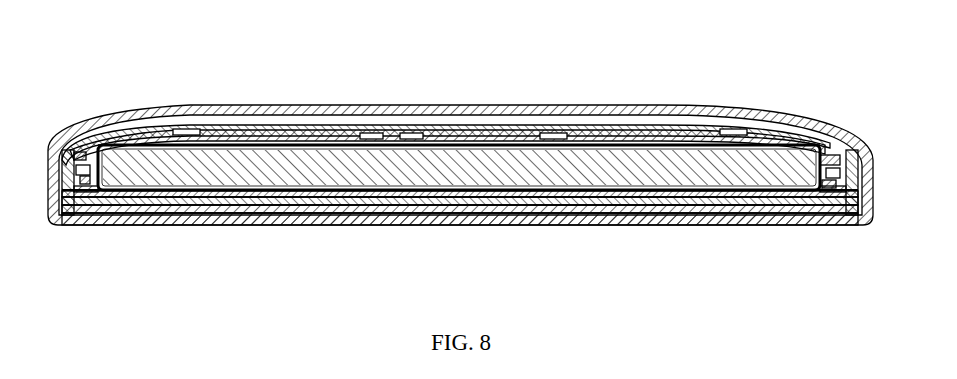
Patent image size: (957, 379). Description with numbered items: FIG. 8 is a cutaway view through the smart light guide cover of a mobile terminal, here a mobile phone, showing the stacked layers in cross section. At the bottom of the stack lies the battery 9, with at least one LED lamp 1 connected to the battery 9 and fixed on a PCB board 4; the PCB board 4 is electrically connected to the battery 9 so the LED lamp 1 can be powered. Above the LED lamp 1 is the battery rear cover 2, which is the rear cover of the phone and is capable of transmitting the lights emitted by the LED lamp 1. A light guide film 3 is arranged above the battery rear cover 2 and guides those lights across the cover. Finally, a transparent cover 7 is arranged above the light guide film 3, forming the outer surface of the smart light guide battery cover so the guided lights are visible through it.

The LED lamp 1 is at (373, 135).
The battery rear cover 2 is at (243, 133).
The light guide film 3 is at (522, 122).
The PCB board 4 is at (298, 147).
The transparent cover 7 is at (660, 113).
The battery 9 is at (455, 173).